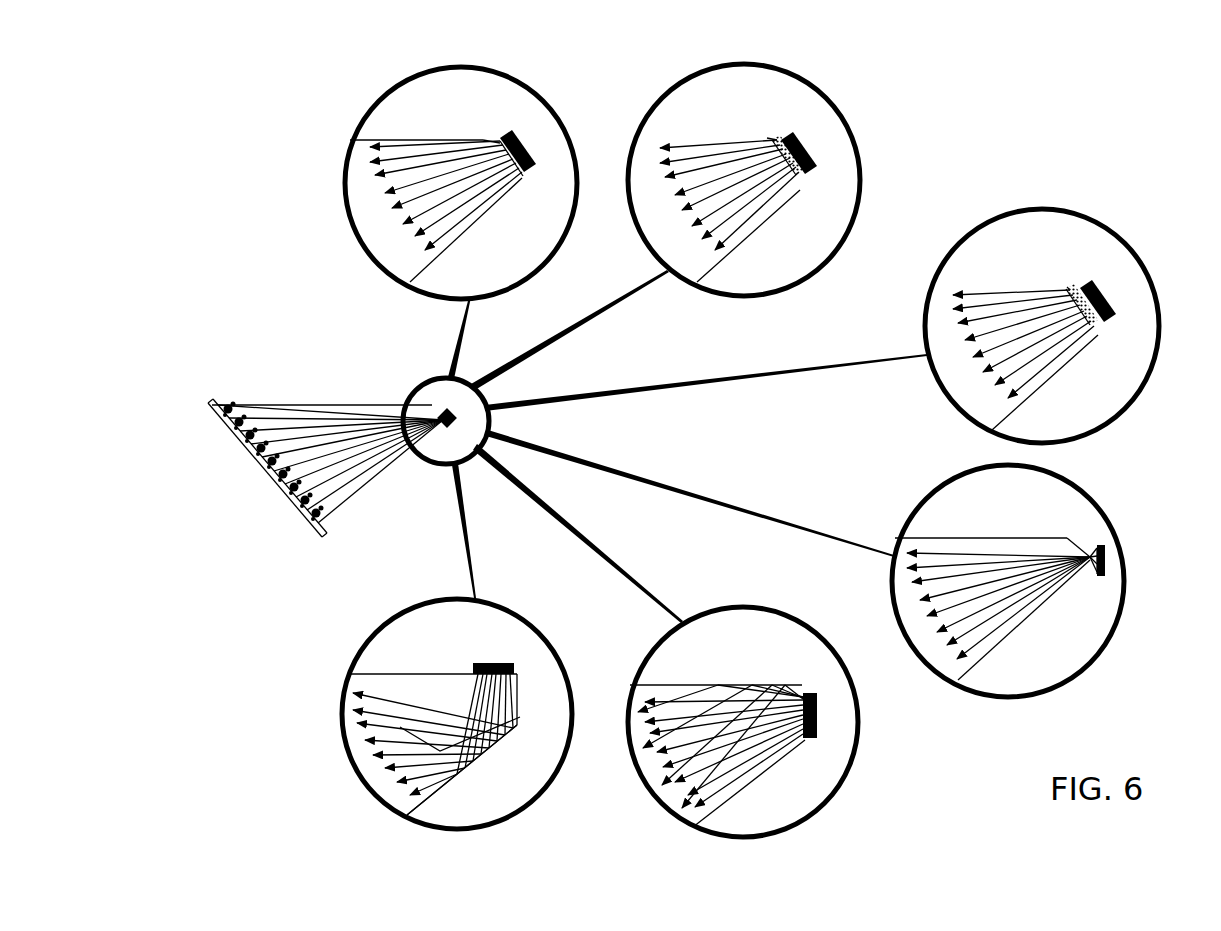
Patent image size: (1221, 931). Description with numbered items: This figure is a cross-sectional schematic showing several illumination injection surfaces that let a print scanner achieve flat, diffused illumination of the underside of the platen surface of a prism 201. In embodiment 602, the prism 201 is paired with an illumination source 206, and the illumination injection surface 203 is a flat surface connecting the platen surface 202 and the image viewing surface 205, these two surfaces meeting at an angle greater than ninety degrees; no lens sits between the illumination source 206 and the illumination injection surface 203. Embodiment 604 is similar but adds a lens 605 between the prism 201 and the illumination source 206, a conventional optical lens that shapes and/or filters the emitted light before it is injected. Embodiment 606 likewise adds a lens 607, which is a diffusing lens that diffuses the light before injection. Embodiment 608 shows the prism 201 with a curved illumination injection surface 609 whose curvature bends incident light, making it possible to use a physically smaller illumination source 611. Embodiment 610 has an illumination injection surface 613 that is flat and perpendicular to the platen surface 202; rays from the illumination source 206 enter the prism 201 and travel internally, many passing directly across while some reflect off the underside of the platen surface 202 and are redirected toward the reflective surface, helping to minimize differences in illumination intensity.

The prism 201 is at (258, 366).
The platen surface 202 is at (397, 140).
The illumination injection surface 203 is at (520, 185).
The image viewing surface 205 is at (453, 248).
The illumination source 206 is at (522, 147).
The embodiment 602 is at (537, 93).
The embodiment 604 is at (847, 122).
The lens 605 is at (773, 138).
The embodiment 606 is at (1123, 242).
The lens 607 is at (1070, 288).
The embodiment 608 is at (1127, 565).
The curved illumination injection surface 609 is at (1075, 540).
The embodiment 610 is at (847, 780).
The illumination source 611 is at (1100, 580).
The illumination injection surface 613 is at (800, 685).